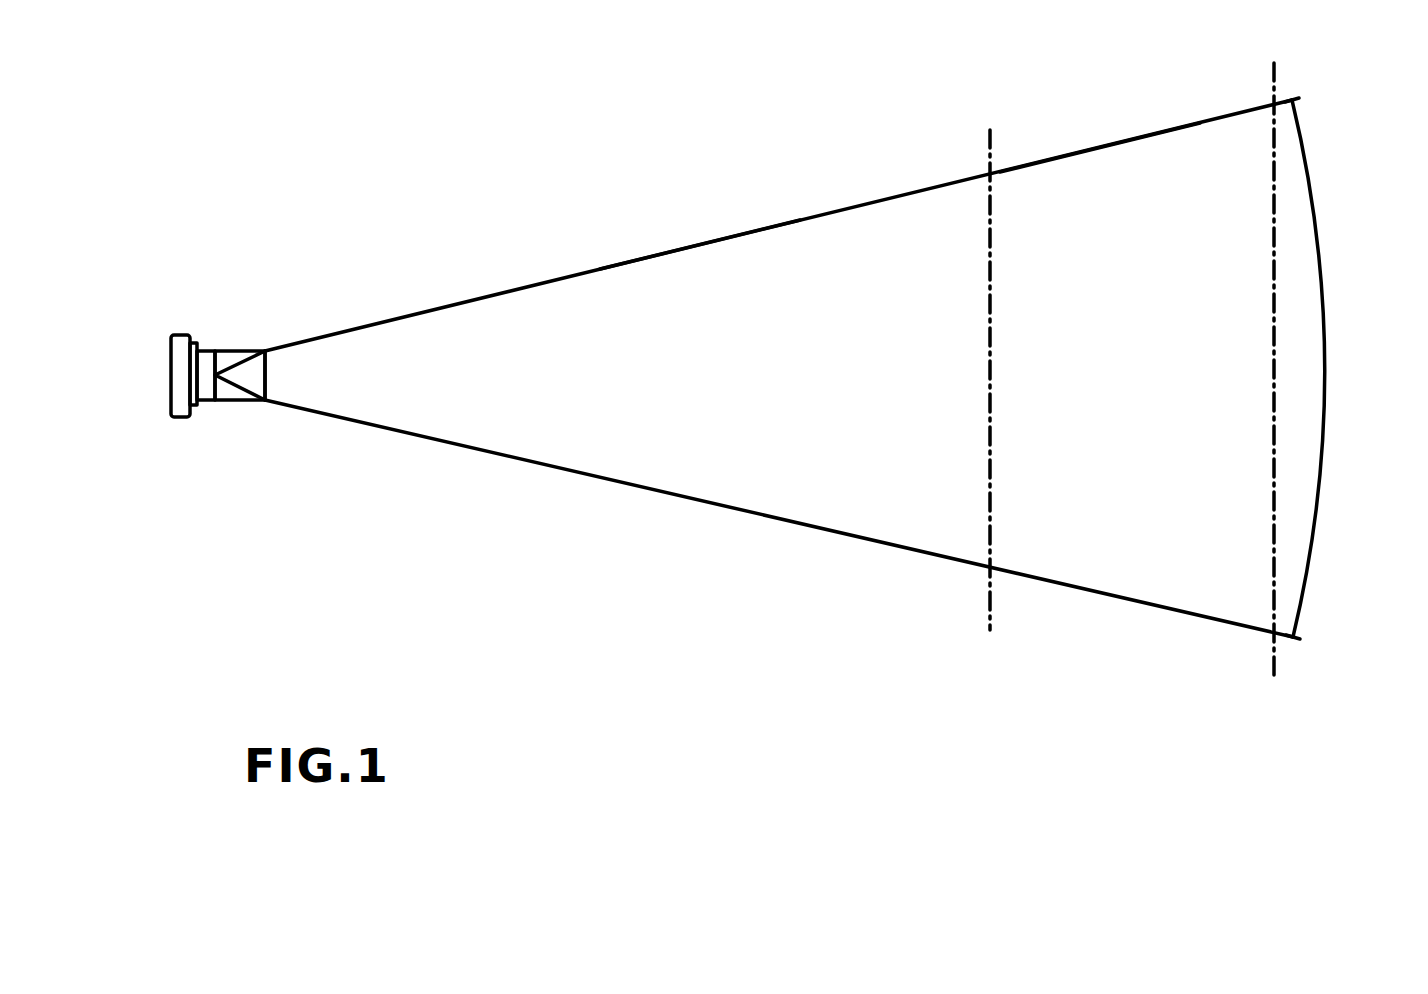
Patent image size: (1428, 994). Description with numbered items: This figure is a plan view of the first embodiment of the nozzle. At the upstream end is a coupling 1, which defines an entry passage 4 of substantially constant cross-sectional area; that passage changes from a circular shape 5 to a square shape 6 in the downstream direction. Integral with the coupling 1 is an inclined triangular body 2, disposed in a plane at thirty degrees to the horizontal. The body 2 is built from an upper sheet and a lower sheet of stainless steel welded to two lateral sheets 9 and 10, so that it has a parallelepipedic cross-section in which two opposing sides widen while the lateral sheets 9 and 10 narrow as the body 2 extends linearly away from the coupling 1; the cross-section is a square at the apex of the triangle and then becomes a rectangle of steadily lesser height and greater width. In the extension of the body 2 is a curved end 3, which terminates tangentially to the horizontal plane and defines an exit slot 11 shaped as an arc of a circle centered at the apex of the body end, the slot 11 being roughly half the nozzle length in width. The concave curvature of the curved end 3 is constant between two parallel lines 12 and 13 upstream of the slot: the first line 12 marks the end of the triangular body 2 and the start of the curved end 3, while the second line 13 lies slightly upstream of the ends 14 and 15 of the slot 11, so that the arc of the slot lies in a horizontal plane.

The coupling 1 is at (228, 350).
The inclined triangular body 2 is at (730, 275).
The curved end 3 is at (1128, 178).
The entry passage 4 is at (170, 368).
The circular shape 5 is at (206, 350).
The square shape 6 is at (258, 350).
The lateral sheet 9 is at (523, 288).
The lateral sheet 10 is at (683, 496).
The exit slot 11 is at (1327, 418).
The first parallel line 12 is at (992, 615).
The second parallel line 13 is at (1274, 655).
The end of the slot 14 is at (1292, 100).
The end of the slot 15 is at (1293, 637).